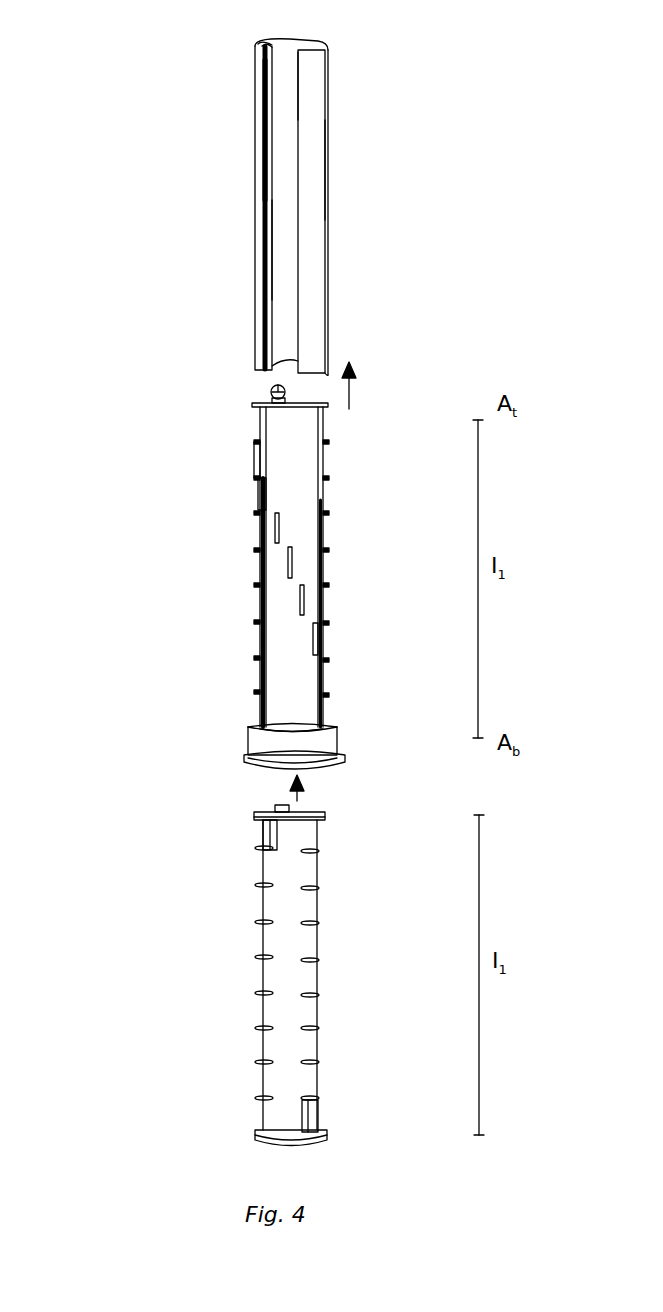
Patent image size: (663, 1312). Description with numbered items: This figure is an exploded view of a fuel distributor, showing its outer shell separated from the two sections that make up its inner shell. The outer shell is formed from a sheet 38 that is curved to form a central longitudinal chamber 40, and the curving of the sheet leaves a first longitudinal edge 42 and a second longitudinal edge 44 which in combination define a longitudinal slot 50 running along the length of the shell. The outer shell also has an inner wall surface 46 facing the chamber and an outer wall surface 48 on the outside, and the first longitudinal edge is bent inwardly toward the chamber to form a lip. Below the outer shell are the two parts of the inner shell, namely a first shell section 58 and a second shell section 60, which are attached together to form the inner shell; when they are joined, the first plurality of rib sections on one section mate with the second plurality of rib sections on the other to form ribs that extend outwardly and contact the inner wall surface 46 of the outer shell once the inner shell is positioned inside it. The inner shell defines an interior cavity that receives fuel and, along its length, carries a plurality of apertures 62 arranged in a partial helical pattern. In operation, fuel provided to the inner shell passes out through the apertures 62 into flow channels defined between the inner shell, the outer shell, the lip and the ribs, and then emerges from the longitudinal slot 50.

The sheet 38 is at (320, 129).
The central longitudinal chamber 40 is at (285, 78).
The first longitudinal edge 42 is at (300, 72).
The second longitudinal edge 44 is at (270, 119).
The inner wall surface 46 is at (284, 44).
The outer wall surface 48 is at (313, 168).
The longitudinal slot 50 is at (285, 238).
The second shell section 60 is at (144, 546).
The first shell section 58 is at (160, 903).
The apertures 62 is at (263, 456).